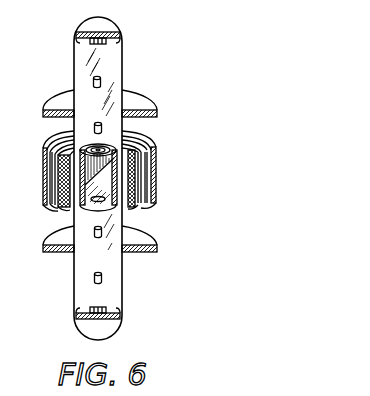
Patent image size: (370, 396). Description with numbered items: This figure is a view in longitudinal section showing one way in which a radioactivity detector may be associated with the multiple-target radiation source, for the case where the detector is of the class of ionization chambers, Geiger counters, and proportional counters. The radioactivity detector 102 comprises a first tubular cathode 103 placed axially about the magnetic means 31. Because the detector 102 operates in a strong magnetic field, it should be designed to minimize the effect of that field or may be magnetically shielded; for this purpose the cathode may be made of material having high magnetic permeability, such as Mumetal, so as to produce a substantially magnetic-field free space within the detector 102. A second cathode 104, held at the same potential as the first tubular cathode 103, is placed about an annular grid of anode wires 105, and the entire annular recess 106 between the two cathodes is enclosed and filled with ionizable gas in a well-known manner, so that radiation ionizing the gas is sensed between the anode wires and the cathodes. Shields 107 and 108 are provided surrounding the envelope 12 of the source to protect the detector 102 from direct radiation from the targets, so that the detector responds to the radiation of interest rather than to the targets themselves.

The envelope 12 is at (76, 74).
The shield 107 is at (139, 98).
The shield 108 is at (70, 253).
The radioactivity detector 102 is at (172, 201).
The magnetic means 31 is at (68, 208).
The annular recess 106 is at (128, 131).
The annular grid of anode wires 105 is at (136, 142).
The second cathode 104 is at (158, 174).
The first tubular cathode 103 is at (140, 205).